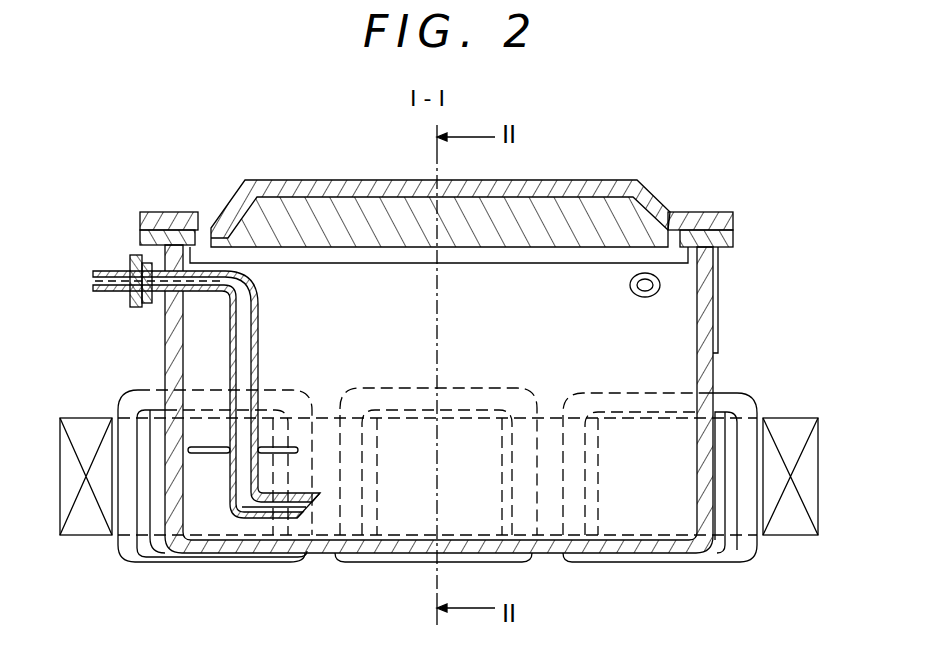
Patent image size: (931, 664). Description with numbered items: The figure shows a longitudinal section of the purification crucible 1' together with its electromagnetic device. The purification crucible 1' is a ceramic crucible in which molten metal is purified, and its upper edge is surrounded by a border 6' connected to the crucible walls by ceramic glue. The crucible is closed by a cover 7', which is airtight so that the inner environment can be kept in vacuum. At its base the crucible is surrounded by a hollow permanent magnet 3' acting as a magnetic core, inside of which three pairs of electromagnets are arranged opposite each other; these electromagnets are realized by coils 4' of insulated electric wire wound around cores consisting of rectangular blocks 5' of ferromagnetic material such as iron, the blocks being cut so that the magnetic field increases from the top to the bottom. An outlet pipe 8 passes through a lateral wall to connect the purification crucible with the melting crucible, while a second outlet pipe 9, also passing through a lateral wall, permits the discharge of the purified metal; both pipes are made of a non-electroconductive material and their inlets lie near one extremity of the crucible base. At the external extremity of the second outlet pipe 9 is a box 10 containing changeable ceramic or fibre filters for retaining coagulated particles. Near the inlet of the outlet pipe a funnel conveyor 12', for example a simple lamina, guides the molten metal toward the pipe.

The purification crucible 1' is at (473, 399).
The hollow permanent magnet 3' is at (466, 476).
The coils 4' is at (437, 505).
The rectangular blocks 5' is at (437, 506).
The border 6' is at (474, 229).
The cover 7' is at (439, 199).
The outlet pipe 8 is at (662, 284).
The second outlet pipe 9 is at (237, 345).
The box 10 is at (131, 272).
The funnel conveyor 12' is at (224, 532).